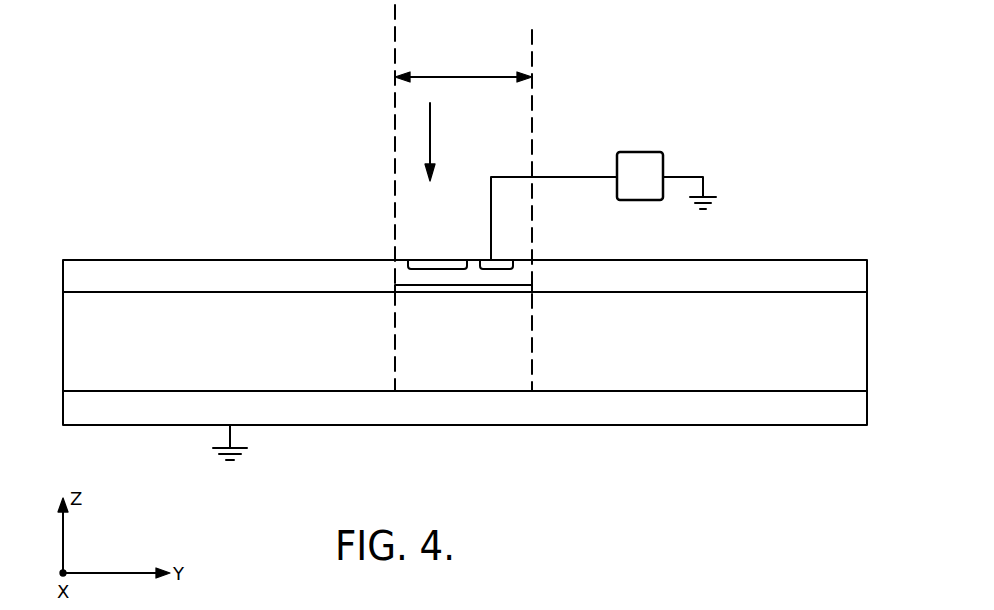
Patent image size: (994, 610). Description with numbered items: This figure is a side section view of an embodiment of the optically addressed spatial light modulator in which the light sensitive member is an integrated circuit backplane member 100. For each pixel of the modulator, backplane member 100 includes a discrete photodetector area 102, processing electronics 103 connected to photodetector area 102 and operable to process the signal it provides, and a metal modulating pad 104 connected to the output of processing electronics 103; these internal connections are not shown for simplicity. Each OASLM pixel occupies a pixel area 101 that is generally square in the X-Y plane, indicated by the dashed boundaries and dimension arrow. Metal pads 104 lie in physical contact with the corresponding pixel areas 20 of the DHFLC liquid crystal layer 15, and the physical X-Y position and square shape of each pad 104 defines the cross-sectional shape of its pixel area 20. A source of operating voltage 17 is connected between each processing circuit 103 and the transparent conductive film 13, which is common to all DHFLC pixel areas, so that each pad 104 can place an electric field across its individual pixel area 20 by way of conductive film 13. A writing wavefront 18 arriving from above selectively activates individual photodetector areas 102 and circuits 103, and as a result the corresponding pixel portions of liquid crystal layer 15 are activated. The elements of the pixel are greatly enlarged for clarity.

The integrated circuit backplane member 100 is at (63, 270).
The pixel area 101 is at (483, 77).
The photodetector area 102 is at (428, 260).
The processing electronics 103 is at (500, 260).
The metal modulating pad 104 is at (470, 288).
The transparent conductive film 13 is at (77, 408).
The liquid crystal layer 15 is at (838, 352).
The voltage source 17 is at (640, 152).
The writing wavefront 18 is at (430, 140).
The pixel area of liquid crystal layer 20 is at (417, 332).